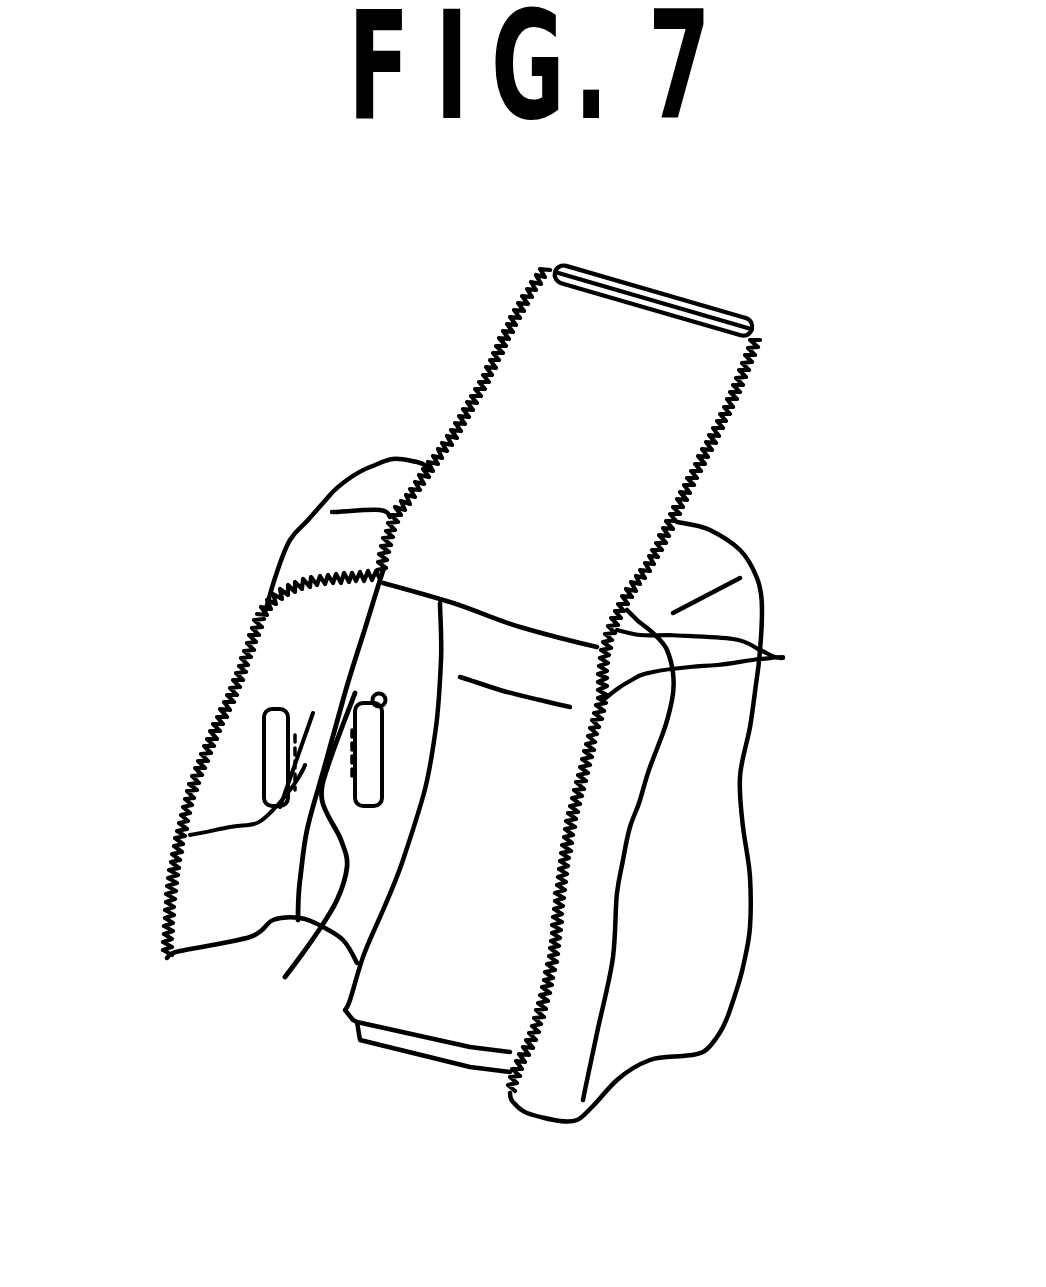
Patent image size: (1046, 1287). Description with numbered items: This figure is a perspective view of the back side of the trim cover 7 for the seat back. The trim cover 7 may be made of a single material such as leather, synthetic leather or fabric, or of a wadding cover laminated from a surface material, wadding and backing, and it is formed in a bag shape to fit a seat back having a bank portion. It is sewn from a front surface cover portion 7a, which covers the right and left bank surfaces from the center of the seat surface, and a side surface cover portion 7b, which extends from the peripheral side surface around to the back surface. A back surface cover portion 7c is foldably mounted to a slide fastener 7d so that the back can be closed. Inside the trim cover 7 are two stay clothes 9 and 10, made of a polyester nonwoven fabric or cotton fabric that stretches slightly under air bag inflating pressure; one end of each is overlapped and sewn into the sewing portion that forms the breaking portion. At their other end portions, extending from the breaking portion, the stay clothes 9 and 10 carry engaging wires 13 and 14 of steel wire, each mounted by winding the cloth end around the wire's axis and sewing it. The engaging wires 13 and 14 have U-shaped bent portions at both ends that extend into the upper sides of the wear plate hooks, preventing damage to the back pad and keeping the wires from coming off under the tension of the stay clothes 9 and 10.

The trim cover 7 is at (338, 455).
The front surface cover portion 7a is at (453, 983).
The side surface cover portion 7b is at (707, 785).
The back surface cover portion 7c is at (657, 350).
The slide fastener 7d is at (783, 658).
The stay cloth 9 is at (317, 710).
The stay cloth 10 is at (318, 813).
The engaging wire 13 is at (190, 833).
The engaging wire 14 is at (378, 695).